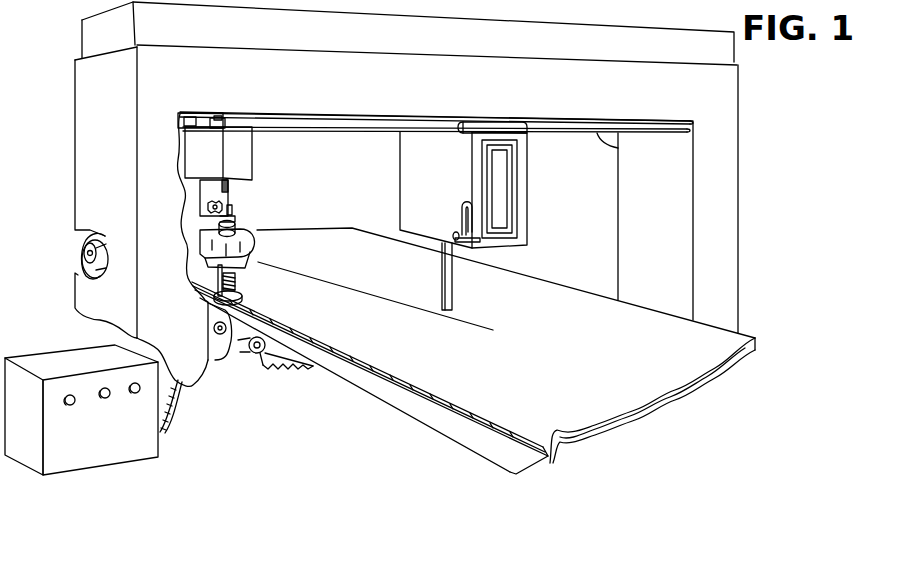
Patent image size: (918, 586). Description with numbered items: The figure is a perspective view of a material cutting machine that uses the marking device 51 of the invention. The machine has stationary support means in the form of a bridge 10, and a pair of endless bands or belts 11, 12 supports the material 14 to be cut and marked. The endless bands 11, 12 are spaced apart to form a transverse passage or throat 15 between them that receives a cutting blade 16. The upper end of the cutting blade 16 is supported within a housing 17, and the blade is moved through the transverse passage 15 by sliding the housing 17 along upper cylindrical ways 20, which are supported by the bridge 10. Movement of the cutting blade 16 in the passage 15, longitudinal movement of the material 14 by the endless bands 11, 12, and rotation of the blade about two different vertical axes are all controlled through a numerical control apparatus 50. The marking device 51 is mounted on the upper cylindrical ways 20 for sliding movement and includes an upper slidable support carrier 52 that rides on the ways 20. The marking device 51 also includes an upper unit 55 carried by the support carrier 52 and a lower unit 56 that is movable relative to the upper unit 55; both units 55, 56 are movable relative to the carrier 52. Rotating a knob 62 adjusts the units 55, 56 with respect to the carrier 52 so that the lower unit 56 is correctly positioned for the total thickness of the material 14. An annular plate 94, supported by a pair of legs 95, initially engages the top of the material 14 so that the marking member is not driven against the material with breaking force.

The bridge 10 is at (742, 208).
The endless band 11 is at (435, 430).
The endless band 12 is at (217, 387).
The material 14 is at (606, 359).
The transverse passage 15 is at (237, 353).
The cutting blade 16 is at (455, 290).
The housing 17 is at (397, 165).
The upper cylindrical ways 20 is at (678, 135).
The numerical control apparatus 50 is at (128, 443).
The marking device 51 is at (256, 146).
The support carrier 52 is at (250, 168).
The upper unit 55 is at (228, 190).
The lower unit 56 is at (255, 243).
The knob 62 is at (208, 207).
The annular plate 94 is at (245, 300).
The legs 95 is at (240, 273).